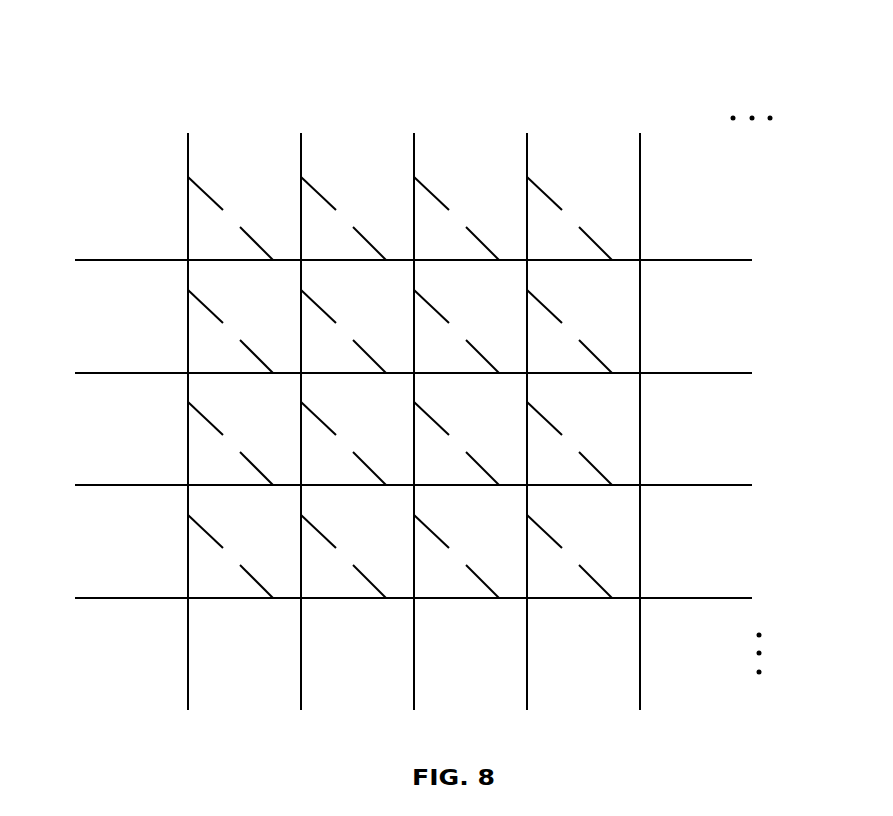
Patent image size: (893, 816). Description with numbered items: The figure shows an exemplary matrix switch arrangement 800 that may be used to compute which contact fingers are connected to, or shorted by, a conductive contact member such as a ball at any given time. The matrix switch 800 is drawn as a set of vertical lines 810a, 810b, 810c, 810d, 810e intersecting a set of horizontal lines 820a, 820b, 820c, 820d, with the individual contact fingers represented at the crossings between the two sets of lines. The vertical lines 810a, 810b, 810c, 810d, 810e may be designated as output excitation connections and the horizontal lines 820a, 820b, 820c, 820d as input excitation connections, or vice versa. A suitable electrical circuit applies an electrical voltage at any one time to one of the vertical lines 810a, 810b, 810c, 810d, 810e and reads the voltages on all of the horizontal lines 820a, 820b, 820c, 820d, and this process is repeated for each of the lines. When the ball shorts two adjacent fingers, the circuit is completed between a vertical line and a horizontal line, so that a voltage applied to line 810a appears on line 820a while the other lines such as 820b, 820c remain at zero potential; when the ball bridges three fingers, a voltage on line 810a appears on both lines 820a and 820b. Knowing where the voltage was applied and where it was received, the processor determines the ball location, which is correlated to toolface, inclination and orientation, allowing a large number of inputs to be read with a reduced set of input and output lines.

The matrix switch arrangement 800 is at (172, 34).
The vertical line 810a is at (188, 162).
The vertical line 810b is at (301, 162).
The vertical line 810c is at (414, 162).
The vertical line 810d is at (527, 162).
The vertical line 810e is at (640, 162).
The horizontal line 820a is at (697, 258).
The horizontal line 820b is at (697, 371).
The horizontal line 820c is at (697, 483).
The horizontal line 820d is at (697, 596).